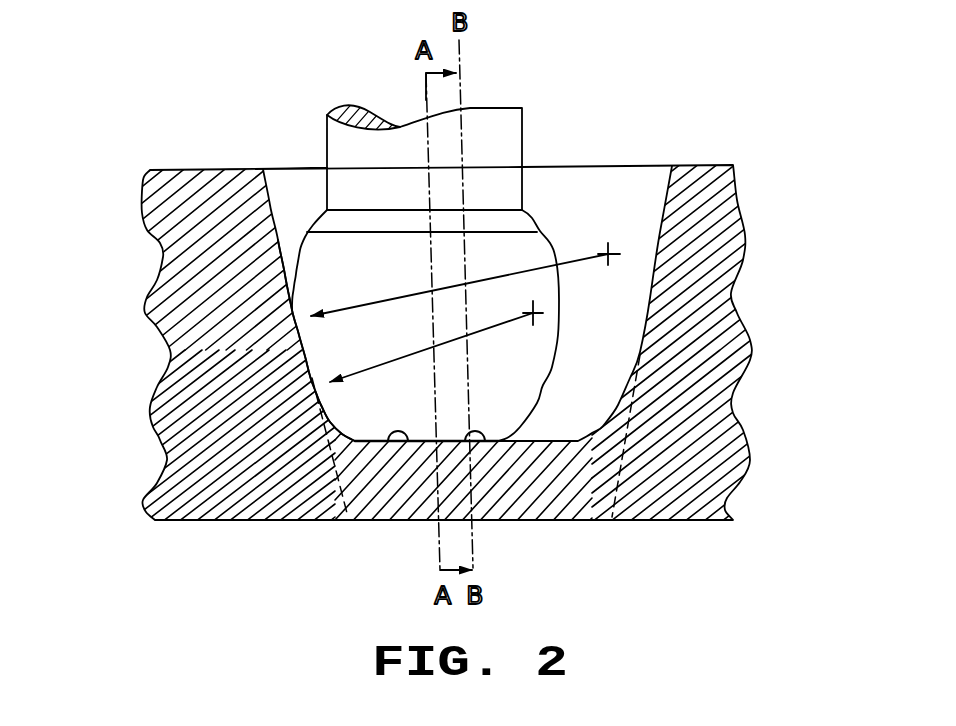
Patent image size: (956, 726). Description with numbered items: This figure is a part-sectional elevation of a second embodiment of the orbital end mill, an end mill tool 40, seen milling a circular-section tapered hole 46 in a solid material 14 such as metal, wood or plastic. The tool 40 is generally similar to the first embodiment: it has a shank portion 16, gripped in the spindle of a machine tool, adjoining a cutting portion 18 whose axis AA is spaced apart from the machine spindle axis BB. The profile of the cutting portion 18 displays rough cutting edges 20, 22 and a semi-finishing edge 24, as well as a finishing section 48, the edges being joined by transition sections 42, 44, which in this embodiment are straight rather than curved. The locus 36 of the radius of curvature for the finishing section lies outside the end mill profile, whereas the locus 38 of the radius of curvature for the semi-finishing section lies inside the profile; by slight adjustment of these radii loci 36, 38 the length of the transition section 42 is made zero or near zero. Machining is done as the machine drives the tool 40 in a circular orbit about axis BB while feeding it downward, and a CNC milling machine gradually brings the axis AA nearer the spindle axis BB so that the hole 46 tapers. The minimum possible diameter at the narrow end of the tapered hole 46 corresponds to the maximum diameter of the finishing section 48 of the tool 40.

The solid material 14 is at (708, 177).
The shank portion 16 is at (326, 116).
The cutting portion 18 is at (558, 374).
The rough cutting edge 20 is at (398, 446).
The rough cutting edge 22 is at (480, 445).
The semi-finishing edge 24 is at (335, 419).
The locus of the radius of curvature for the finishing section 36 is at (610, 252).
The locus of the radius of curvature for the semi-finishing section 38 is at (540, 311).
The end mill tool 40 is at (565, 119).
The transition section 42 is at (317, 340).
The transition section 44 is at (325, 430).
The tapered hole 46 is at (268, 203).
The finishing section 48 is at (300, 287).